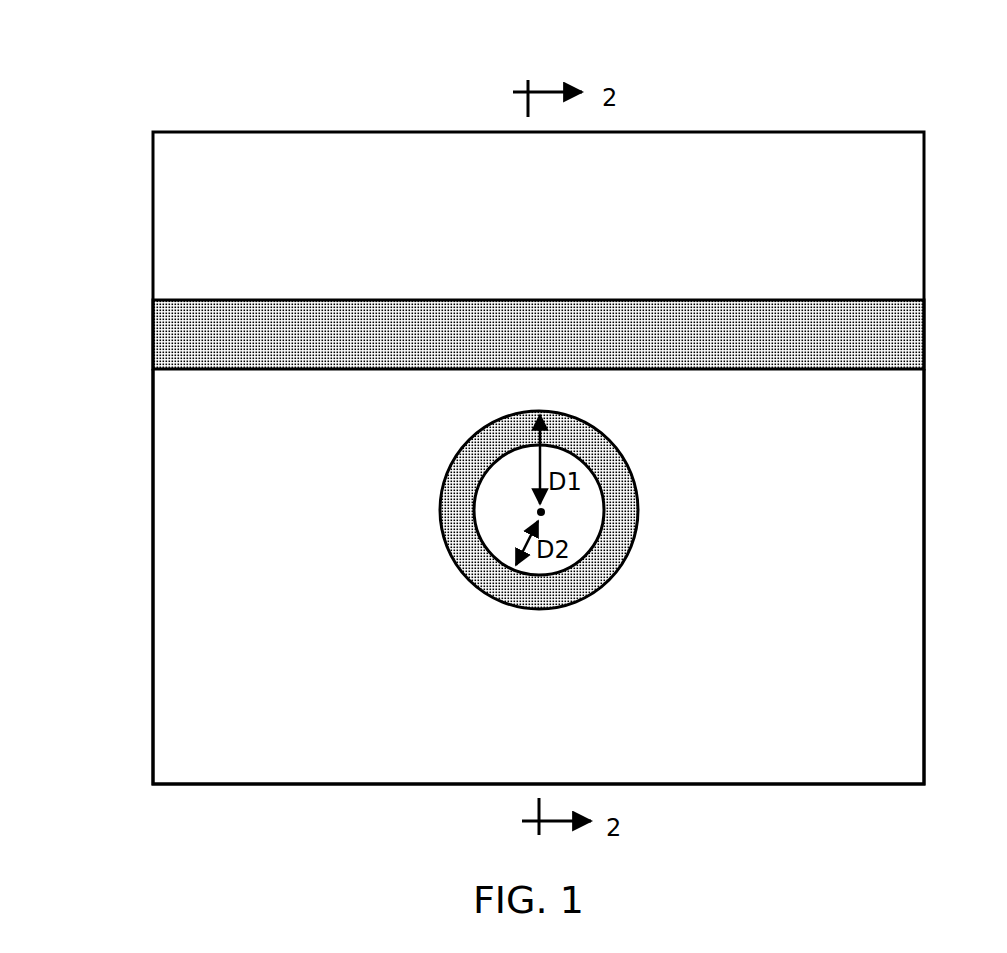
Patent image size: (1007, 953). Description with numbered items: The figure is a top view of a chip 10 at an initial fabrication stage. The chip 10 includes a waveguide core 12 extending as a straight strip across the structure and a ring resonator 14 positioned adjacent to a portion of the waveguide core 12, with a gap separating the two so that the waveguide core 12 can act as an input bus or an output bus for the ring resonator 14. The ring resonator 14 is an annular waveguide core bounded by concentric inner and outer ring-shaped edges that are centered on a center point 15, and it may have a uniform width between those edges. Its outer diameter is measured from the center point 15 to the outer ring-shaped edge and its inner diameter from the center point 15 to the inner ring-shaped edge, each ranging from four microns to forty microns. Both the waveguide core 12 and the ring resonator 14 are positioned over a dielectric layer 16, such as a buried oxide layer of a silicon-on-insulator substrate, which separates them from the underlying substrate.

The chip 10 is at (132, 82).
The waveguide core 12 is at (210, 332).
The ring resonator 14 is at (622, 514).
The center point 15 is at (538, 511).
The dielectric layer 16 is at (210, 602).